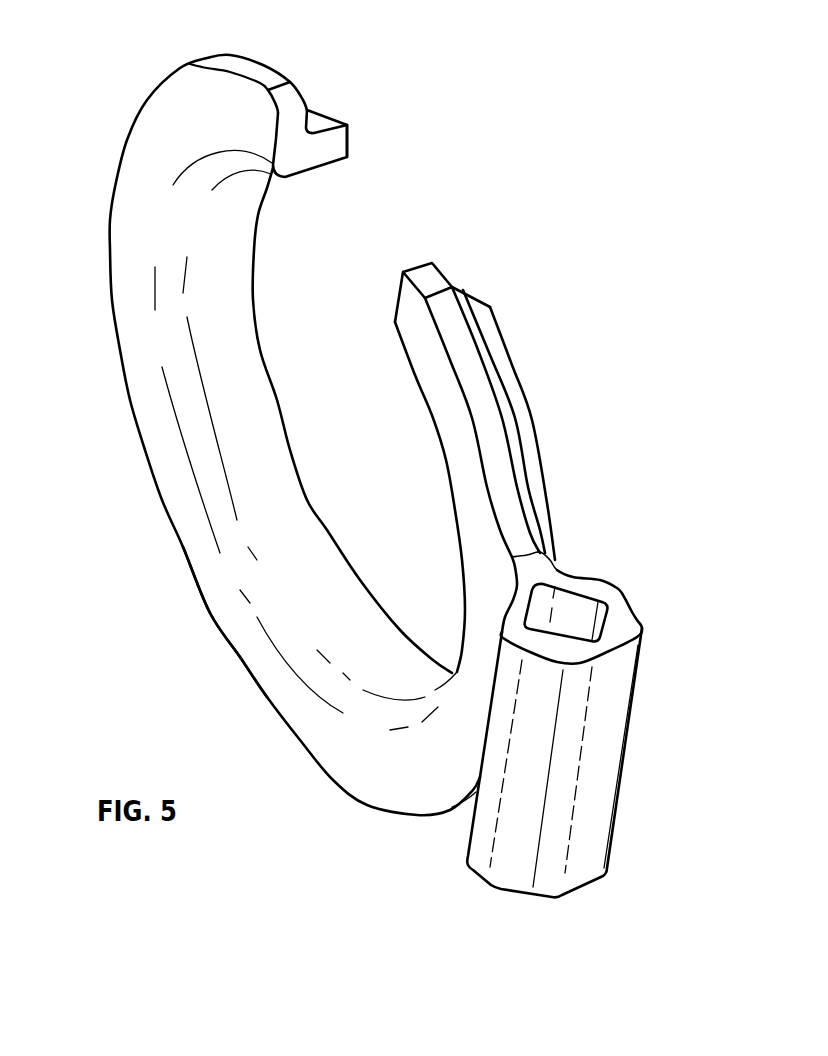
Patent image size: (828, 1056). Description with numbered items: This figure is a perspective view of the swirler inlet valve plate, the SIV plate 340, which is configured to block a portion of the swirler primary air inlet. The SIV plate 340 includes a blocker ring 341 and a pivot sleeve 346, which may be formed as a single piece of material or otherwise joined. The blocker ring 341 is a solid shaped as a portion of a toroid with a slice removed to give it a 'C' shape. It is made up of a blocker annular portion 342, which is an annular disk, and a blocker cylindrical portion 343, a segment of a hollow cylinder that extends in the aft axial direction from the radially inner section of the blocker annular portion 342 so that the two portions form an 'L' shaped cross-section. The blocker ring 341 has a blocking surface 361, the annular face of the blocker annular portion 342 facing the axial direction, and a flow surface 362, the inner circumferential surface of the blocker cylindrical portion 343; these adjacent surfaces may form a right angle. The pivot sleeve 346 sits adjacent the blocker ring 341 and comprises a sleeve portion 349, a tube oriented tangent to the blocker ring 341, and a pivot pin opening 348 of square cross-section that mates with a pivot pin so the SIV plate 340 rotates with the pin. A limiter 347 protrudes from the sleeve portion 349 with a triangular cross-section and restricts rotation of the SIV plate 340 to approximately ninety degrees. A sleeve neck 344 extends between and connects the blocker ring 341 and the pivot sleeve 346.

The SIV plate 340 is at (135, 67).
The blocker ring 341 is at (243, 560).
The blocker annular portion 342 is at (270, 83).
The blocker cylindrical portion 343 is at (337, 140).
The sleeve neck 344 is at (537, 548).
The pivot sleeve 346 is at (594, 577).
The limiter 347 is at (633, 637).
The pivot pin opening 348 is at (590, 622).
The sleeve portion 349 is at (570, 733).
The blocking surface 361 is at (256, 653).
The flow surface 362 is at (320, 594).